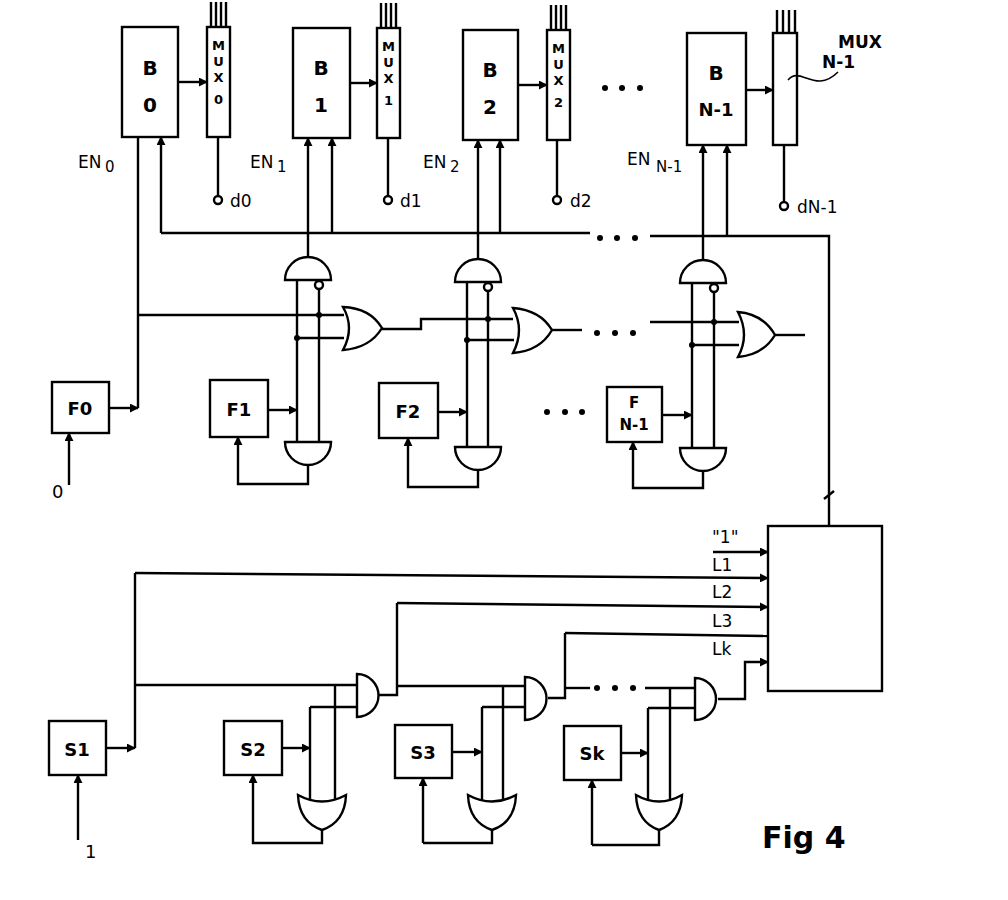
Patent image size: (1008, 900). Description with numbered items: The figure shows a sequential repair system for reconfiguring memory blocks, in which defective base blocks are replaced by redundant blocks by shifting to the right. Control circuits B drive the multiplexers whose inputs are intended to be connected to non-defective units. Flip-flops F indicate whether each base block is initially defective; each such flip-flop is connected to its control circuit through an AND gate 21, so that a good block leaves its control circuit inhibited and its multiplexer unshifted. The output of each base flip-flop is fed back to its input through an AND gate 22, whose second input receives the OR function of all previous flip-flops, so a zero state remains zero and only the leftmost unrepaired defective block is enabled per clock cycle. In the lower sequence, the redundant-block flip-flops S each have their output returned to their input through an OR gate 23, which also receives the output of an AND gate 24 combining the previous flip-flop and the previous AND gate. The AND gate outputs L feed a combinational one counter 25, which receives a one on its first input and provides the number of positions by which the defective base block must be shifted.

The AND gate 21 is at (457, 268).
The AND gate 22 is at (494, 459).
The OR gate 23 is at (511, 817).
The AND gate 24 is at (373, 674).
The combinational 1 counter 25 is at (836, 692).